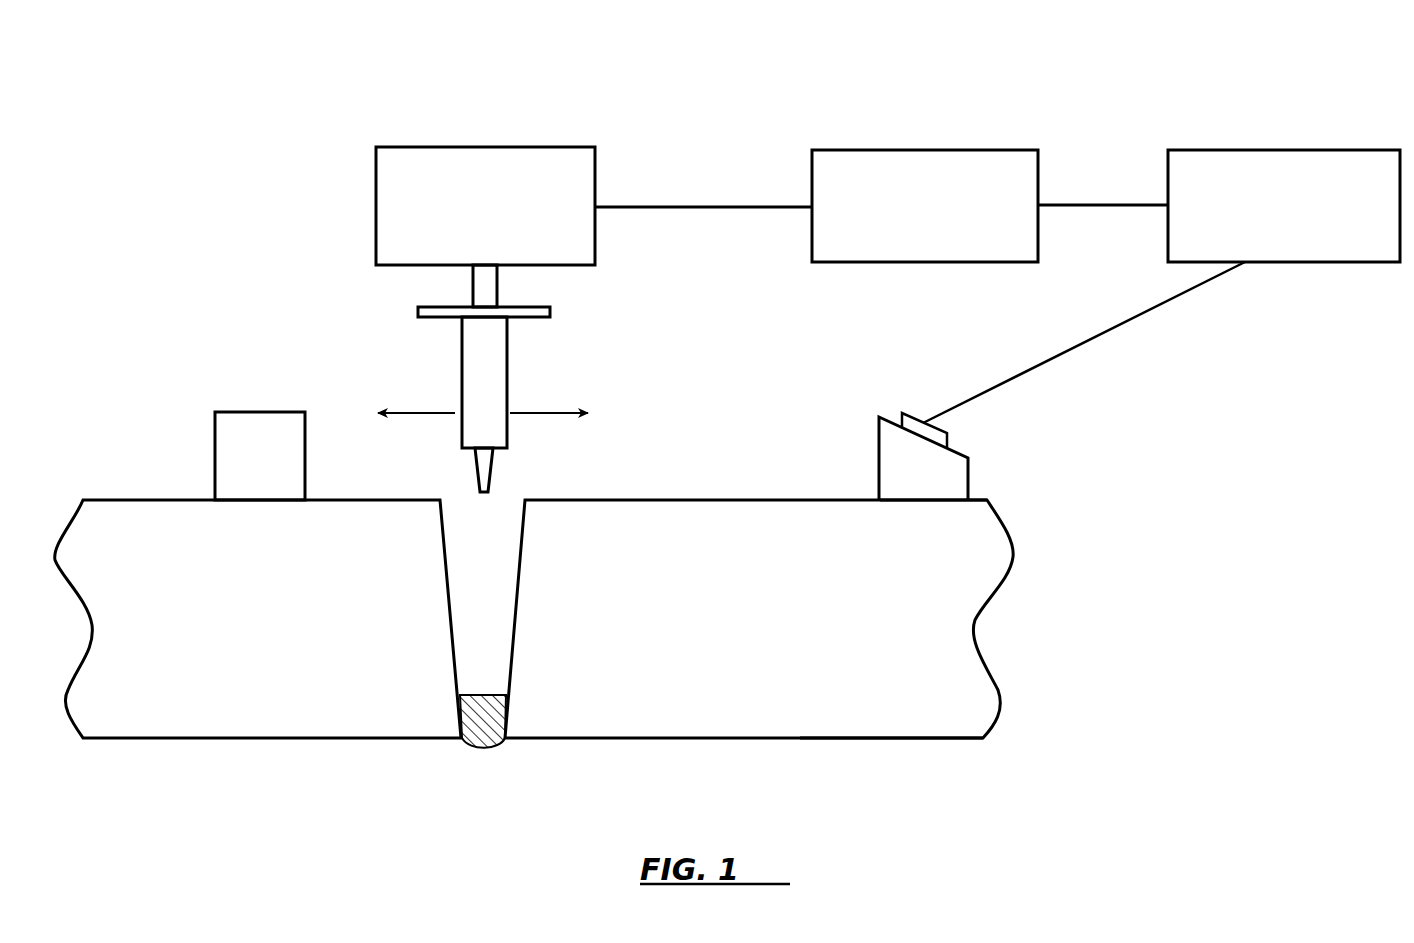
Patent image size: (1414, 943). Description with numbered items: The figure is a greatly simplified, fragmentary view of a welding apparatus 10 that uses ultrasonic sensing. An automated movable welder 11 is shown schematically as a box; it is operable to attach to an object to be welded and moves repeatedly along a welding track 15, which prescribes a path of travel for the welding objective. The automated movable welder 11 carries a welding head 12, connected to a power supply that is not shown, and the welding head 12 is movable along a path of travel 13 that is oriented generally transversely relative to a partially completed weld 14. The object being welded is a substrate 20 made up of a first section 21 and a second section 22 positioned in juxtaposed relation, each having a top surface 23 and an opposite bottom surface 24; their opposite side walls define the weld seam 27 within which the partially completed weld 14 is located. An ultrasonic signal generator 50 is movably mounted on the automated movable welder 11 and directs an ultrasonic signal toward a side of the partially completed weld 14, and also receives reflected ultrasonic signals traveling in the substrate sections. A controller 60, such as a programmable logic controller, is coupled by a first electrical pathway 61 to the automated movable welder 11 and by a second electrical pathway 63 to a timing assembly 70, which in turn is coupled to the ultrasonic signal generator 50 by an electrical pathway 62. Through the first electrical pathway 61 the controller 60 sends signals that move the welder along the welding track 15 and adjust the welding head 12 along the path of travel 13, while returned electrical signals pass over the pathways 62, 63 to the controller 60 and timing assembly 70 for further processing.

The welding apparatus 10 is at (1115, 130).
The automated movable welder 11 is at (612, 150).
The welding head 12 is at (483, 340).
The path of travel 13 is at (420, 411).
The partially completed weld 14 is at (487, 742).
The welding track 15 is at (263, 420).
The substrate 20 is at (650, 770).
The first section 21 is at (657, 606).
The second section 22 is at (318, 606).
The top surface 23 is at (978, 498).
The bottom surface 24 is at (897, 742).
The weld seam 27 is at (495, 512).
The ultrasonic signal generator 50 is at (897, 472).
The controller 60 is at (880, 150).
The first electrical pathway 61 is at (667, 207).
The electrical pathway 62 is at (1045, 350).
The second electrical pathway 63 is at (1080, 207).
The timing assembly 70 is at (1310, 150).